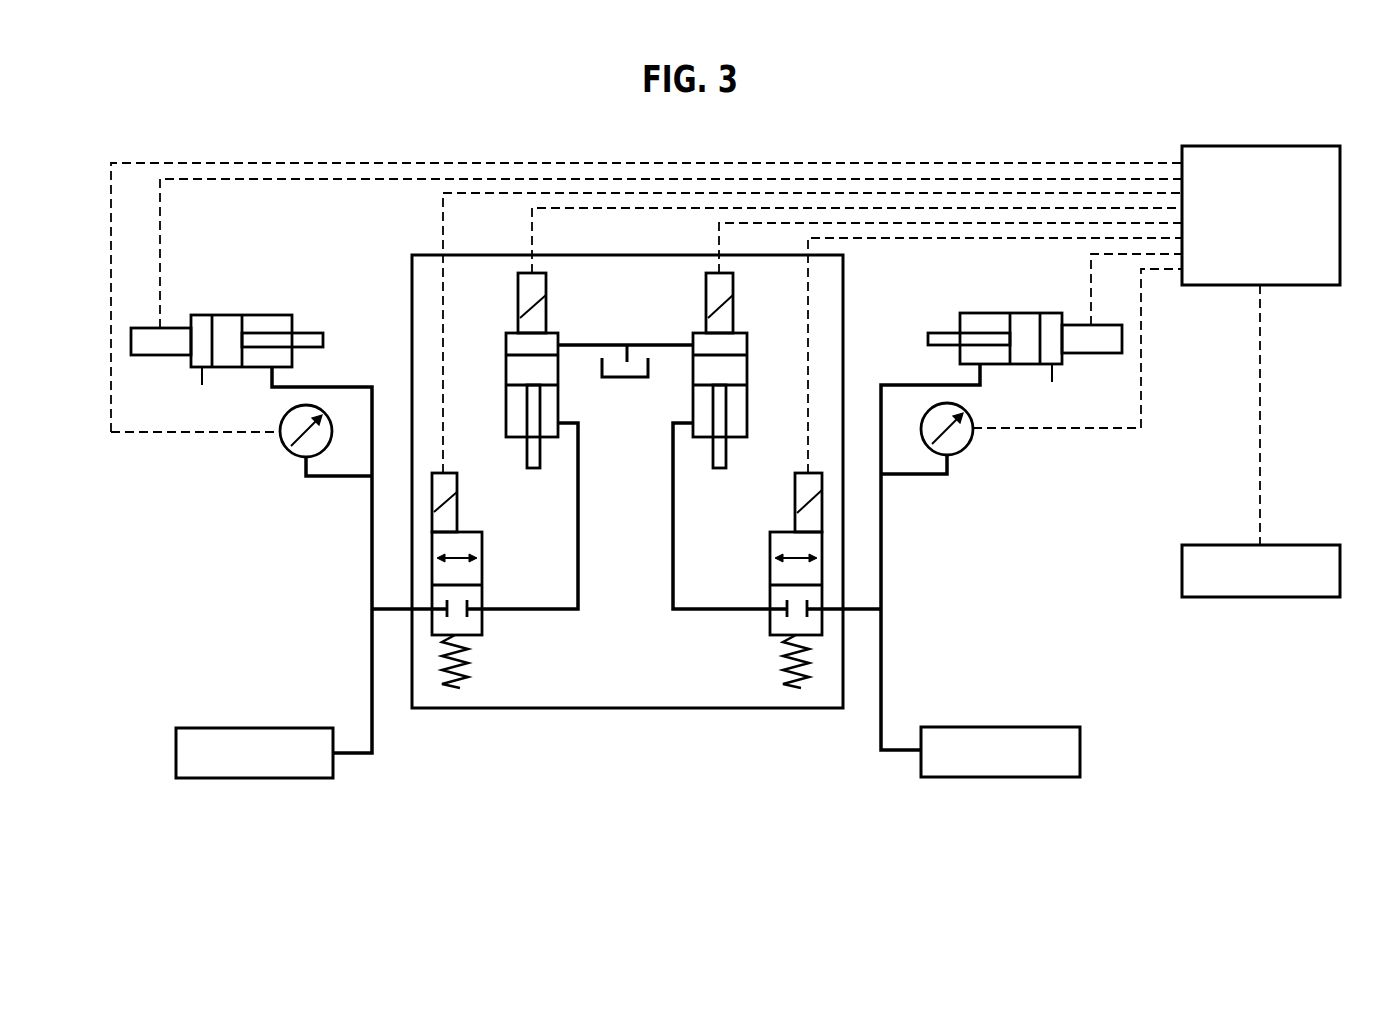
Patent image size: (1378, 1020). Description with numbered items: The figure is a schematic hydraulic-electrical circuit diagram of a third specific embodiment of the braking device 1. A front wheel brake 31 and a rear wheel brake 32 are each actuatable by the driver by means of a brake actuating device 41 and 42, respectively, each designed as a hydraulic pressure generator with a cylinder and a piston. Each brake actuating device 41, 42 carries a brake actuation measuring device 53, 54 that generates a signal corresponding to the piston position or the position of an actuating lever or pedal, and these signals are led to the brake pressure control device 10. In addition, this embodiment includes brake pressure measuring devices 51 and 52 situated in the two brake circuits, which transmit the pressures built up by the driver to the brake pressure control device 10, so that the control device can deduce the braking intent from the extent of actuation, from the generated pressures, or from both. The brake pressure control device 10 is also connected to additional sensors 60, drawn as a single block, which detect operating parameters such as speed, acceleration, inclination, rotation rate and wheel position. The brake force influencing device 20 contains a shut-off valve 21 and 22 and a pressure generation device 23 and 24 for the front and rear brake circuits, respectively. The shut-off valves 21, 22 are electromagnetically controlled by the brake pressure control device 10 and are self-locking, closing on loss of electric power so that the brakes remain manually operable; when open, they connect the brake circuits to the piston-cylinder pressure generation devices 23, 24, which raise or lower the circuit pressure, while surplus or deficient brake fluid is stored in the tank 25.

The braking device 1 is at (222, 132).
The brake pressure control device 10 is at (1210, 285).
The brake force influencing device 20 is at (643, 710).
The shut-off valve 21 is at (485, 622).
The shut-off valve 22 is at (768, 620).
The pressure generation device 23 is at (547, 320).
The pressure generation device 24 is at (700, 322).
The tank 25 is at (630, 377).
The front wheel brake 31 is at (254, 727).
The rear wheel brake 32 is at (998, 727).
The brake actuating device 41 is at (262, 314).
The brake actuating device 42 is at (1000, 312).
The brake pressure measuring device 51 is at (296, 460).
The brake pressure measuring device 52 is at (958, 457).
The brake actuation measuring device 53 is at (178, 355).
The brake actuation measuring device 54 is at (1070, 352).
The sensors 60 is at (1217, 542).